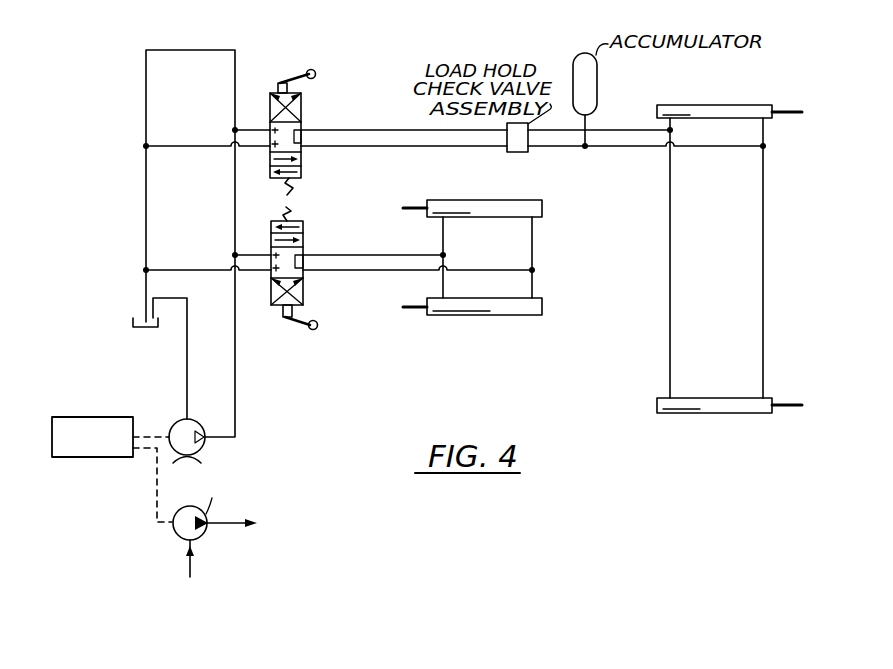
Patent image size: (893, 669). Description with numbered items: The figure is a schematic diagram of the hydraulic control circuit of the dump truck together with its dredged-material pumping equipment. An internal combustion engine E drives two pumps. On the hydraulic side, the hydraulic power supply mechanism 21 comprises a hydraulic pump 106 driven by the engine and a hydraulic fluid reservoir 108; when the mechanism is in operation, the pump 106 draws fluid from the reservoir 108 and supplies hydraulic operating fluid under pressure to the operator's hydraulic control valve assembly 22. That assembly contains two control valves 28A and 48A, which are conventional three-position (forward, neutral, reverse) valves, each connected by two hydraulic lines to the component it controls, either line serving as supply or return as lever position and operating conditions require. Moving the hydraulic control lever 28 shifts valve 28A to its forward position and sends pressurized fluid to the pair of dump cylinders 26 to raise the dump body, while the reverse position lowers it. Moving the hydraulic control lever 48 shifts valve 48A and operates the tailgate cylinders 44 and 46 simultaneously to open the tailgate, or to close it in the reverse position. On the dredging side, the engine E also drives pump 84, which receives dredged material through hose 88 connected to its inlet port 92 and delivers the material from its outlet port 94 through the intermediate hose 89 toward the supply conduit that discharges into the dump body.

The hydraulic power supply mechanism 21 is at (118, 367).
The operator's hydraulic control valve assembly 22 is at (322, 101).
The hydraulic cylinders 26 is at (542, 298).
The hydraulic control lever 28 is at (293, 323).
The control valve 28A is at (306, 227).
The hydraulic cylinder 44 is at (677, 414).
The hydraulic cylinder 46 is at (758, 78).
The hydraulic control lever 48 is at (296, 76).
The control valve 48A is at (306, 175).
The pump 84 is at (178, 535).
The hose 88 is at (190, 570).
The intermediate hose 89 is at (236, 521).
The inlet port 92 is at (198, 541).
The outlet port 94 is at (223, 495).
The hydraulic pump 106 is at (190, 418).
The hydraulic fluid reservoir 108 is at (133, 321).
The internal combustion engine E is at (74, 417).